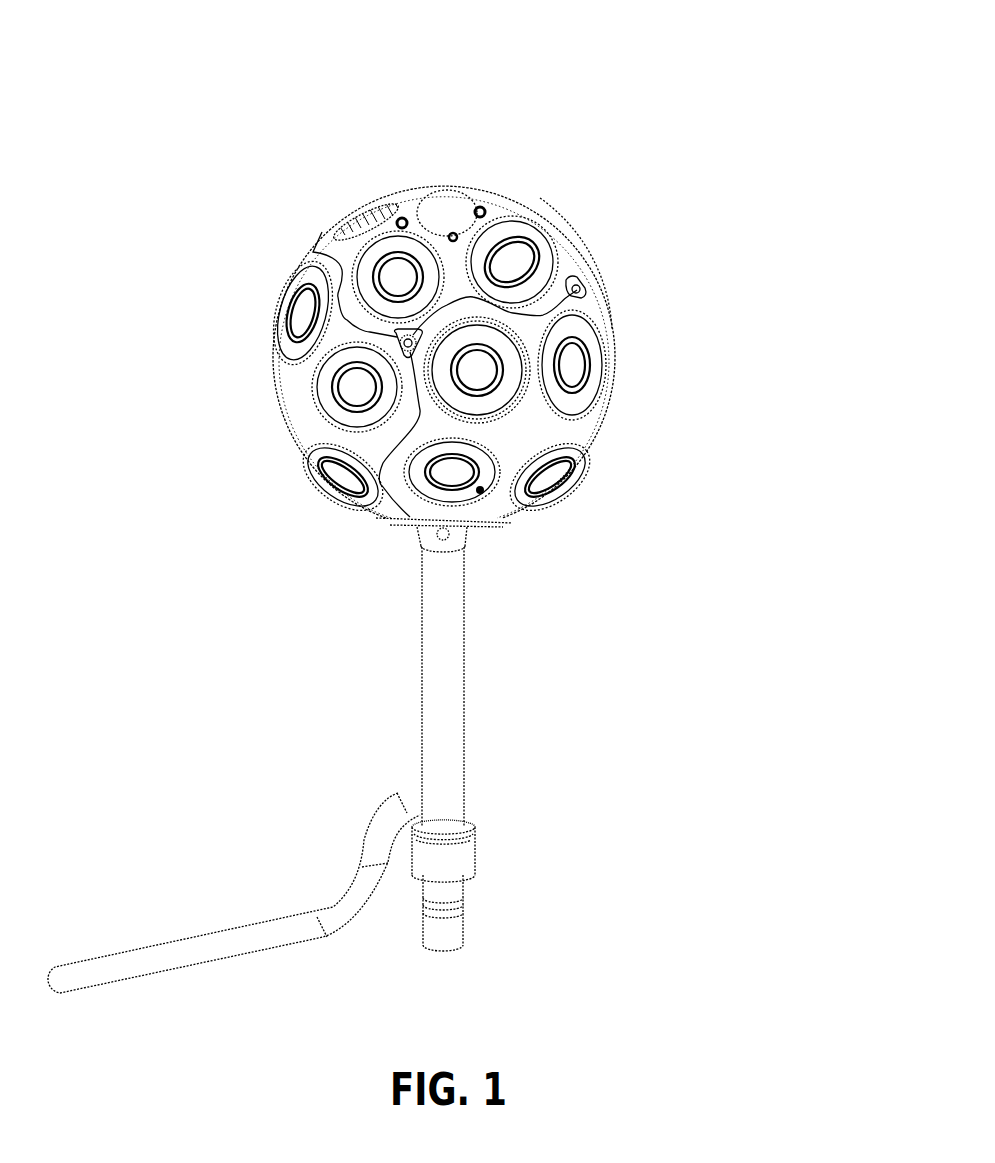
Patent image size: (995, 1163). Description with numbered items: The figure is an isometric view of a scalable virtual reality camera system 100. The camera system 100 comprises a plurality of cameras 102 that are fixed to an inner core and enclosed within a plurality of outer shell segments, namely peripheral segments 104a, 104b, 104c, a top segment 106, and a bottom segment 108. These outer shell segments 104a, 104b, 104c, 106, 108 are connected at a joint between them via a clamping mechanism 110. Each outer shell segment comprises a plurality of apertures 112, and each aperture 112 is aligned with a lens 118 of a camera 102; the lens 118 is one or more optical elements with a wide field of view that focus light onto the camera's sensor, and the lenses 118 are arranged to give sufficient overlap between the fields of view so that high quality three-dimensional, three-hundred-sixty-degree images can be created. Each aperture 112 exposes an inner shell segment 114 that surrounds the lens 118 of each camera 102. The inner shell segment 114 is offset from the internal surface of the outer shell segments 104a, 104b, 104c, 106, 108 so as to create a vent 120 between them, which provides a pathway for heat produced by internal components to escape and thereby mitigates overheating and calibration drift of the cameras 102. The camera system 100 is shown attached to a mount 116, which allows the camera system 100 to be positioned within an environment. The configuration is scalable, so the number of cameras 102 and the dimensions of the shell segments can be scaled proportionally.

The camera system 100 is at (105, 24).
The camera 102 is at (586, 349).
The peripheral segment 104a is at (572, 432).
The peripheral outer shell segment 104b is at (303, 423).
The peripheral outer shell segment 104c is at (575, 272).
The top segment 106 is at (528, 228).
The bottom segment 108 is at (494, 539).
The clamping mechanism 110 is at (410, 338).
The aperture 112 is at (318, 375).
The inner shell segment 114 is at (315, 288).
The mount 116 is at (442, 713).
The lens 118 is at (573, 378).
The vent 120 is at (370, 213).